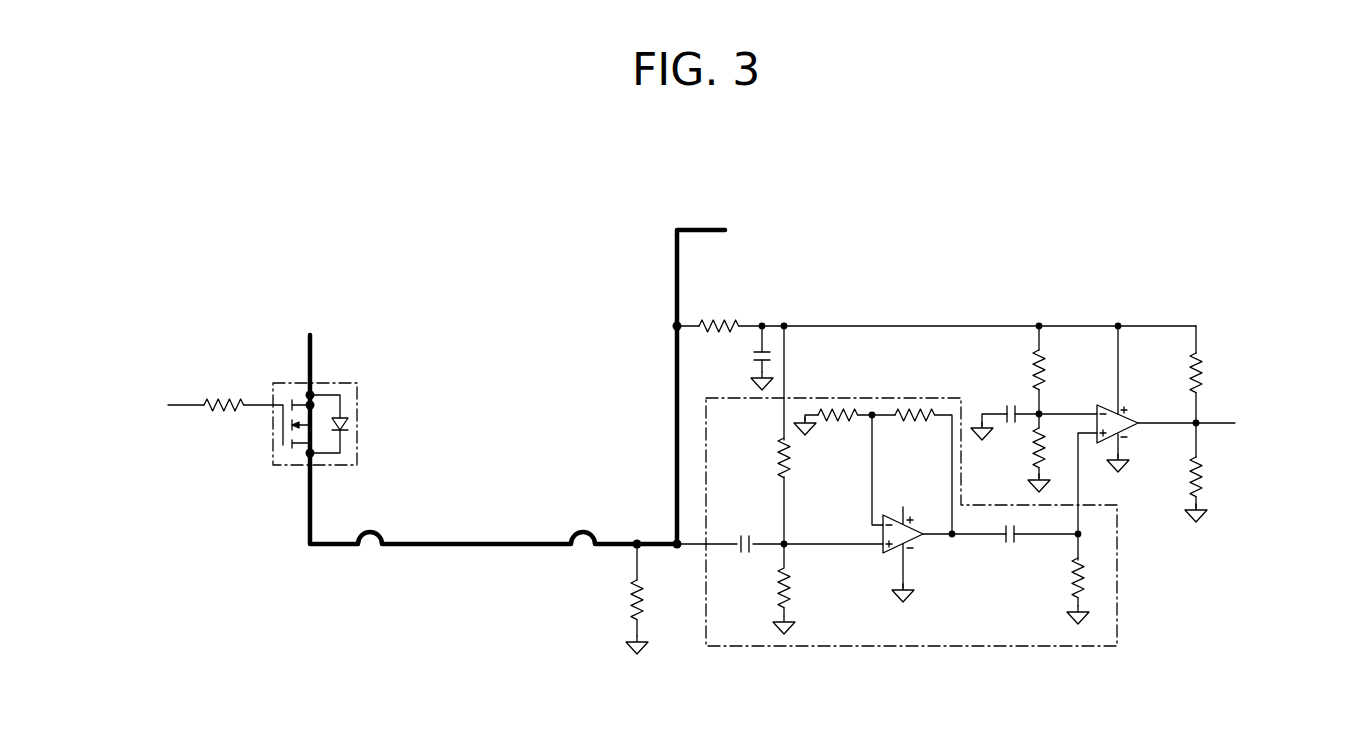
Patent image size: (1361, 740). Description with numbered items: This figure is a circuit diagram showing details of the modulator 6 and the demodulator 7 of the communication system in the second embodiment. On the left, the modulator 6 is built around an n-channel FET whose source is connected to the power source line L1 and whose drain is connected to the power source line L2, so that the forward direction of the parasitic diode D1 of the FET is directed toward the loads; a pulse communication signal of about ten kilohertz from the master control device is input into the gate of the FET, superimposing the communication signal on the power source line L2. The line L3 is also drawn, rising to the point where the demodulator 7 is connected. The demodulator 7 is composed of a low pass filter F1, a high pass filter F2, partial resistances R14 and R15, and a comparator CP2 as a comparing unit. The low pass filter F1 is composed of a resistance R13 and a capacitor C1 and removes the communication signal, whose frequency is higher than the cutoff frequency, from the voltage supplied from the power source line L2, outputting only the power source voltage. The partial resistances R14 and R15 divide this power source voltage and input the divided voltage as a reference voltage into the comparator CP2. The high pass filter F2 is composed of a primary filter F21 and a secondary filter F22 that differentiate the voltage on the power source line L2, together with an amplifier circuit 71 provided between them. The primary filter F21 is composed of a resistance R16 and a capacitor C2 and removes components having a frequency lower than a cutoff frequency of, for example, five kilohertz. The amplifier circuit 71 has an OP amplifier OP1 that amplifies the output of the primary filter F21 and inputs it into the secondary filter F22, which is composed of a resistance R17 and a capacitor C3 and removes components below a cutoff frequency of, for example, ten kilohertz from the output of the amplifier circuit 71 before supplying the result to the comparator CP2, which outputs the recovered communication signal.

The modulator 6 is at (348, 271).
The demodulator 7 is at (1220, 271).
The power source line L1 is at (312, 358).
The power source line L2 is at (477, 540).
The third line L3 is at (700, 228).
The parasitic diode D1 is at (348, 425).
The low pass filter F1 is at (738, 347).
The high pass filter F2 is at (907, 646).
The primary filter F21 is at (841, 510).
The secondary filter F22 is at (1074, 564).
The resistance R13 is at (720, 320).
The partial resistance R14 is at (1032, 368).
The partial resistance R15 is at (1036, 456).
The resistance R16 is at (778, 585).
The resistance R17 is at (1085, 582).
The capacitor C1 is at (771, 355).
The capacitor C2 is at (740, 534).
The capacitor C3 is at (1003, 540).
The amplifier circuit 71 is at (873, 524).
The OP amplifier OP1 is at (890, 557).
The comparator CP2 is at (1110, 405).